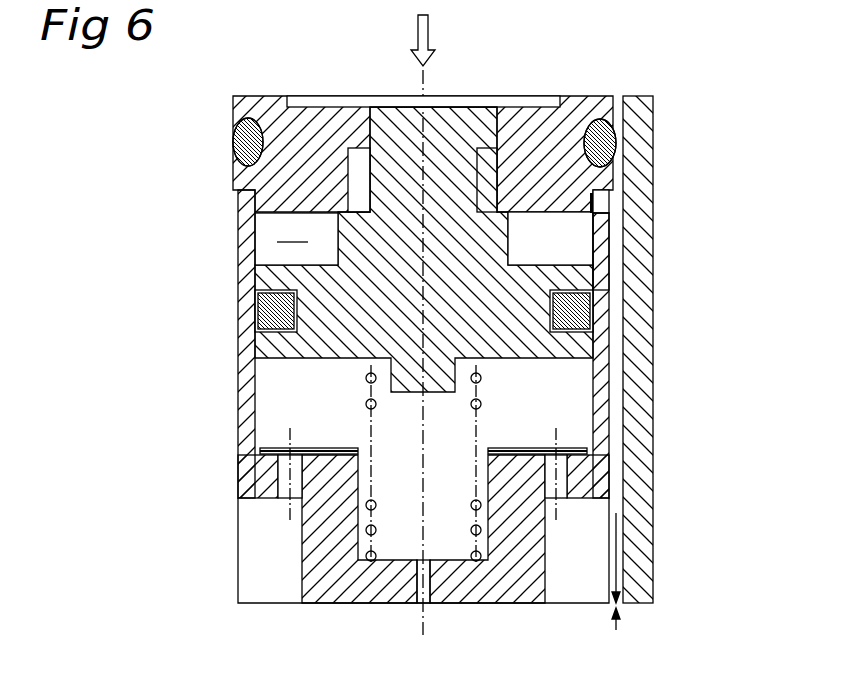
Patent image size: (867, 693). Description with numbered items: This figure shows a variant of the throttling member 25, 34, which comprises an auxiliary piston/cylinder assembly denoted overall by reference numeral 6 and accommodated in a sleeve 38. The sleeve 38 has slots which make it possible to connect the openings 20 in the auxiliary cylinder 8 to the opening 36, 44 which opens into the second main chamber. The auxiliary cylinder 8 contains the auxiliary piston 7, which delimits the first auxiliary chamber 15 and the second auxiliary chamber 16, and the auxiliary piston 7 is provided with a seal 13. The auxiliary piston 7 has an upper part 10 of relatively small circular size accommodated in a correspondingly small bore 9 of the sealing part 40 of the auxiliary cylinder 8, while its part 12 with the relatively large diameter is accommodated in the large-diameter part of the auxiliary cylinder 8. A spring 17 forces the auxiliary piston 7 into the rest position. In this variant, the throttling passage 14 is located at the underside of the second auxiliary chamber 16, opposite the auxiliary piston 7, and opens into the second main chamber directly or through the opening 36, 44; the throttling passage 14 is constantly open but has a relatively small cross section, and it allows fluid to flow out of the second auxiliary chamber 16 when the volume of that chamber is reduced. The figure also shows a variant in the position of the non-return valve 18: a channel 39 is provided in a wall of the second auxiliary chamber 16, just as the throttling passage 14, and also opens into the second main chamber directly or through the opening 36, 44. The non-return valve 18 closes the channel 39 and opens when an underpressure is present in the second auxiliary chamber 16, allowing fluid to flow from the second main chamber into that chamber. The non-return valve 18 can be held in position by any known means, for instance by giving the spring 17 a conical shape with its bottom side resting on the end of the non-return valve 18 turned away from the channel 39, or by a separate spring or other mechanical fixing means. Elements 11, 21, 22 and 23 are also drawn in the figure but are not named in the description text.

The auxiliary piston/cylinder assembly 6 is at (709, 349).
The auxiliary piston 7 is at (398, 116).
The auxiliary cylinder 8 is at (600, 442).
The small bore 9 is at (500, 135).
The upper part 10 is at (477, 212).
The chamber 11 is at (590, 391).
The part with relatively large diameter 12 is at (570, 278).
The seal 13 is at (575, 305).
The throttling passage 14 is at (420, 562).
The first auxiliary chamber 15 is at (547, 233).
The second auxiliary chamber 16 is at (567, 455).
The spring 17 is at (520, 450).
The non-return valve 18 is at (543, 403).
The openings 20 is at (600, 240).
The top plate 21 is at (485, 180).
The slot 22 is at (450, 157).
The recess R 23 is at (345, 255).
The throttling member 25 is at (172, 350).
The throttling member 34 is at (210, 448).
The opening 36 is at (662, 590).
The sleeve 38 is at (640, 547).
The channel 39 is at (560, 490).
The sealing part 40 is at (310, 150).
The opening 44 is at (618, 628).